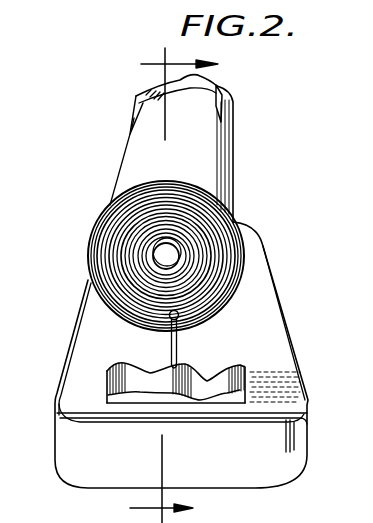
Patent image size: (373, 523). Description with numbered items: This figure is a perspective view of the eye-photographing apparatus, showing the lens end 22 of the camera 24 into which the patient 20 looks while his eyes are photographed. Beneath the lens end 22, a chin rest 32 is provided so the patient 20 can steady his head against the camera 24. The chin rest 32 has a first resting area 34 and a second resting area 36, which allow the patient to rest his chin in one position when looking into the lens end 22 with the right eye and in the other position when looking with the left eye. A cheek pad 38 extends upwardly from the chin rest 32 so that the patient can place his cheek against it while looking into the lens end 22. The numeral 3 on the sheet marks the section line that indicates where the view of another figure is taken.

The section line 3- 3 is at (167, 285).
The patient 20 is at (181, 311).
The lens end 22 is at (220, 240).
The camera 24 is at (215, 183).
The chin rest 32 is at (183, 398).
The first resting area 34 is at (133, 385).
The second resting area 36 is at (205, 382).
The cheek pad 38 is at (180, 319).